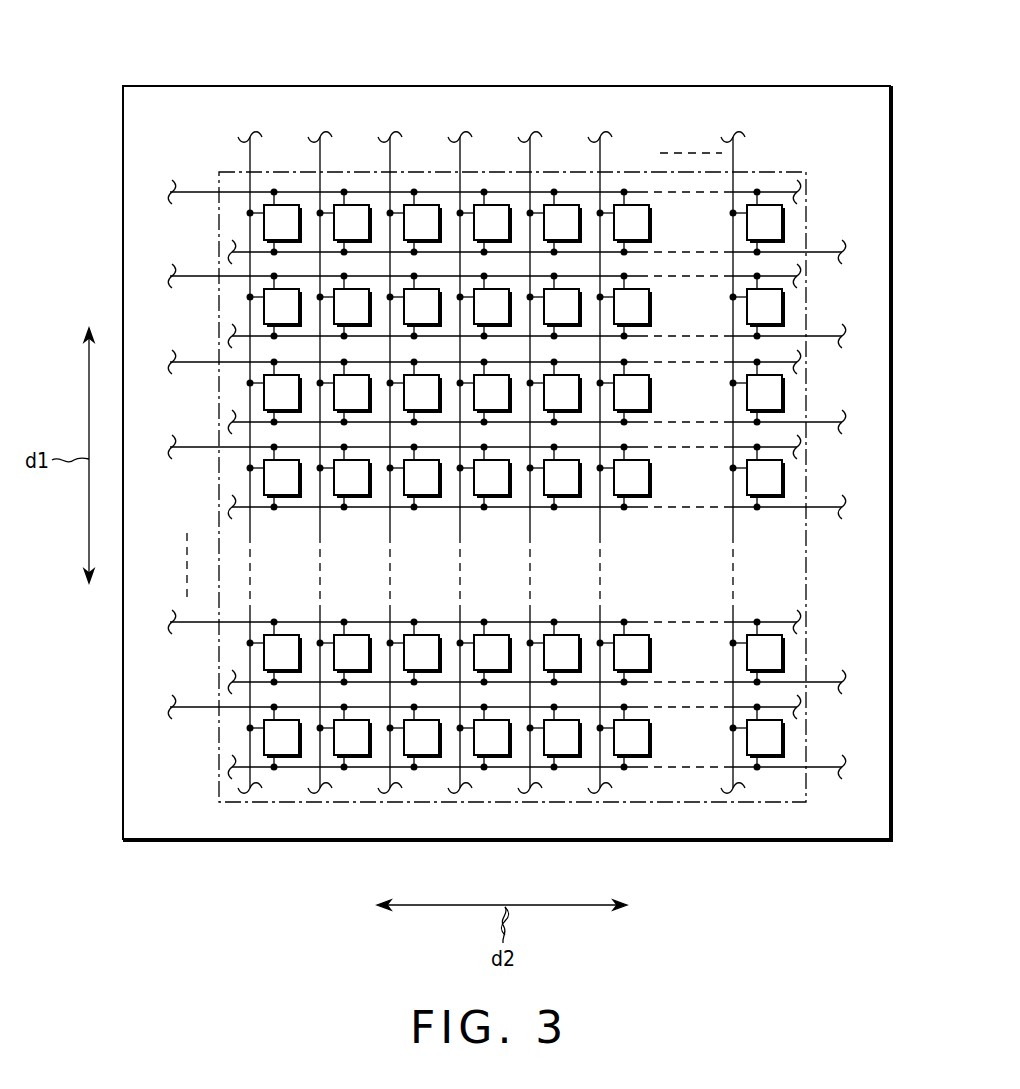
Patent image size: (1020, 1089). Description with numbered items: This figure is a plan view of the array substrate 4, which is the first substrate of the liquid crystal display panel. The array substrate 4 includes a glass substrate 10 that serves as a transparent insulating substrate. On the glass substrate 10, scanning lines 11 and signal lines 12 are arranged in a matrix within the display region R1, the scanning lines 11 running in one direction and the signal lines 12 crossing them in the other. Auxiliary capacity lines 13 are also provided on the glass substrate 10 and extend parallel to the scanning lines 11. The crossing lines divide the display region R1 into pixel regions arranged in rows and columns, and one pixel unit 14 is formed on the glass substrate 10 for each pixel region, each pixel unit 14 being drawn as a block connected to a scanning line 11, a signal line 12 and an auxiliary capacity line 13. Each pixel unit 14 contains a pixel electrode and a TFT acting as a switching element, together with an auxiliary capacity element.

The array substrate 4 is at (535, 80).
The glass substrate 10 is at (851, 828).
The scanning lines 11 is at (484, 449).
The signal lines 12 is at (491, 463).
The auxiliary capacity lines 13 is at (537, 509).
The pixel unit 14 is at (284, 241).
The display region R1 is at (806, 583).